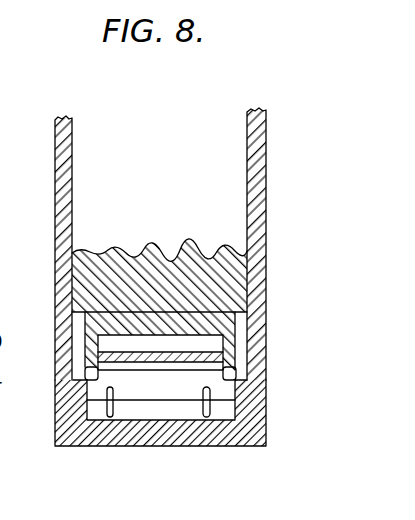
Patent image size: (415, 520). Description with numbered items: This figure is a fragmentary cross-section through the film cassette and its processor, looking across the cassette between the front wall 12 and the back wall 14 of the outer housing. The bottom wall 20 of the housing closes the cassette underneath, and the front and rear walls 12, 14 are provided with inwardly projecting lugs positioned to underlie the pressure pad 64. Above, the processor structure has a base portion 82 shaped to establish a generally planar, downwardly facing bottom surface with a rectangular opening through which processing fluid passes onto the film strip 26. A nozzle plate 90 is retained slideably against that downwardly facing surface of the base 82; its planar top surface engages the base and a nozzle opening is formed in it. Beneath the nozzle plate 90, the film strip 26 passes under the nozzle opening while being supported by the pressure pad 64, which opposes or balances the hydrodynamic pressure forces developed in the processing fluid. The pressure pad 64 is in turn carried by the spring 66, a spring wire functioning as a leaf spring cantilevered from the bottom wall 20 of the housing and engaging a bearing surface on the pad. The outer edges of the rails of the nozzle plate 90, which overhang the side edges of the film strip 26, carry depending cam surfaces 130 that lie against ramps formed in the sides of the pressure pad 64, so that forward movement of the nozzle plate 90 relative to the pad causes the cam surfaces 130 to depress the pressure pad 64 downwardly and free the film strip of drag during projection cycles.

The front wall 12 is at (55, 142).
The back wall 14 is at (263, 154).
The bottom wall 20 is at (148, 447).
The film strip 26 is at (210, 343).
The pressure pad 64 is at (222, 387).
The spring 66 is at (108, 403).
The base portion 82 is at (97, 261).
The nozzle plate 90 is at (162, 334).
The cam surfaces 130 is at (100, 375).